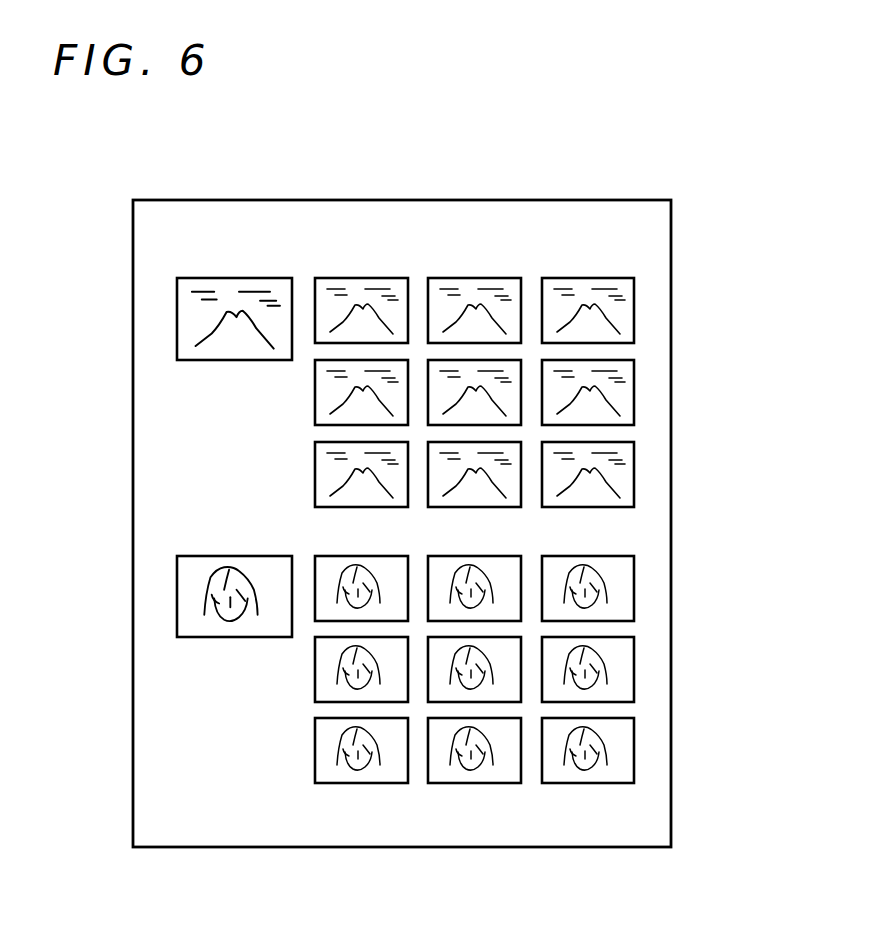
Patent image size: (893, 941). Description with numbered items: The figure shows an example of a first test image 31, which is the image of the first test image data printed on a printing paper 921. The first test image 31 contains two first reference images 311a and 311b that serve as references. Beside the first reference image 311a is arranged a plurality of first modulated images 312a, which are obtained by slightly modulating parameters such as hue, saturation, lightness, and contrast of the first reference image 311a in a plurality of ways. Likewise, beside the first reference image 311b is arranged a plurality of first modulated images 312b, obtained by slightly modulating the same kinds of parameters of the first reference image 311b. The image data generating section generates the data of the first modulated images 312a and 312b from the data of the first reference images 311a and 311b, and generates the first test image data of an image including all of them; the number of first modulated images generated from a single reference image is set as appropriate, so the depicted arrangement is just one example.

The first test image 31 is at (242, 155).
The printing paper 921 is at (440, 199).
The first reference image 311a is at (146, 328).
The first modulated images 312a is at (654, 377).
The first reference image 311b is at (146, 602).
The first modulated images 312b is at (653, 670).